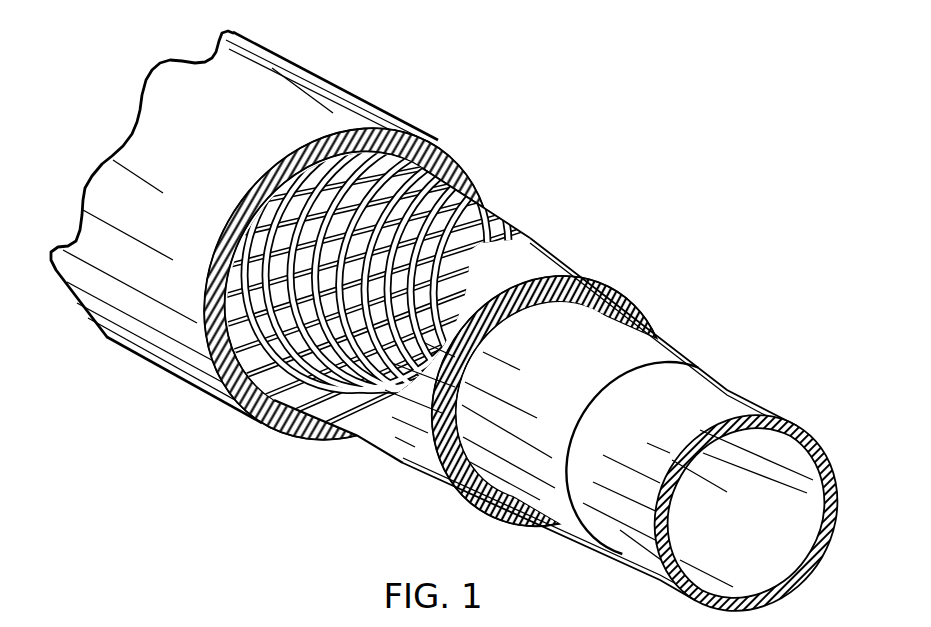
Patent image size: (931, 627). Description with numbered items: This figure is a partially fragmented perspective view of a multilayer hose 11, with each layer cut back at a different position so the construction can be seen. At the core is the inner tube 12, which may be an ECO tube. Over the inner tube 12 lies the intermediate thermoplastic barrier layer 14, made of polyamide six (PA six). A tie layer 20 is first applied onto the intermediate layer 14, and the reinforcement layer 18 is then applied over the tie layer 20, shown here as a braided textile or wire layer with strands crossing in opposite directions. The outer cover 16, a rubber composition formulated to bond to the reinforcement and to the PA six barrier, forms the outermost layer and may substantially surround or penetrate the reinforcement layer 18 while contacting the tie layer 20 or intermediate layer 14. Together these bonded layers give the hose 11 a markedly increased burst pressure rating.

The hose 11 is at (462, 317).
The inner tube 12 is at (715, 393).
The intermediate thermoplastic barrier layer 14 is at (633, 343).
The outer cover 16 is at (272, 69).
The reinforcement layer 18 is at (470, 227).
The tie layer 20 is at (537, 263).